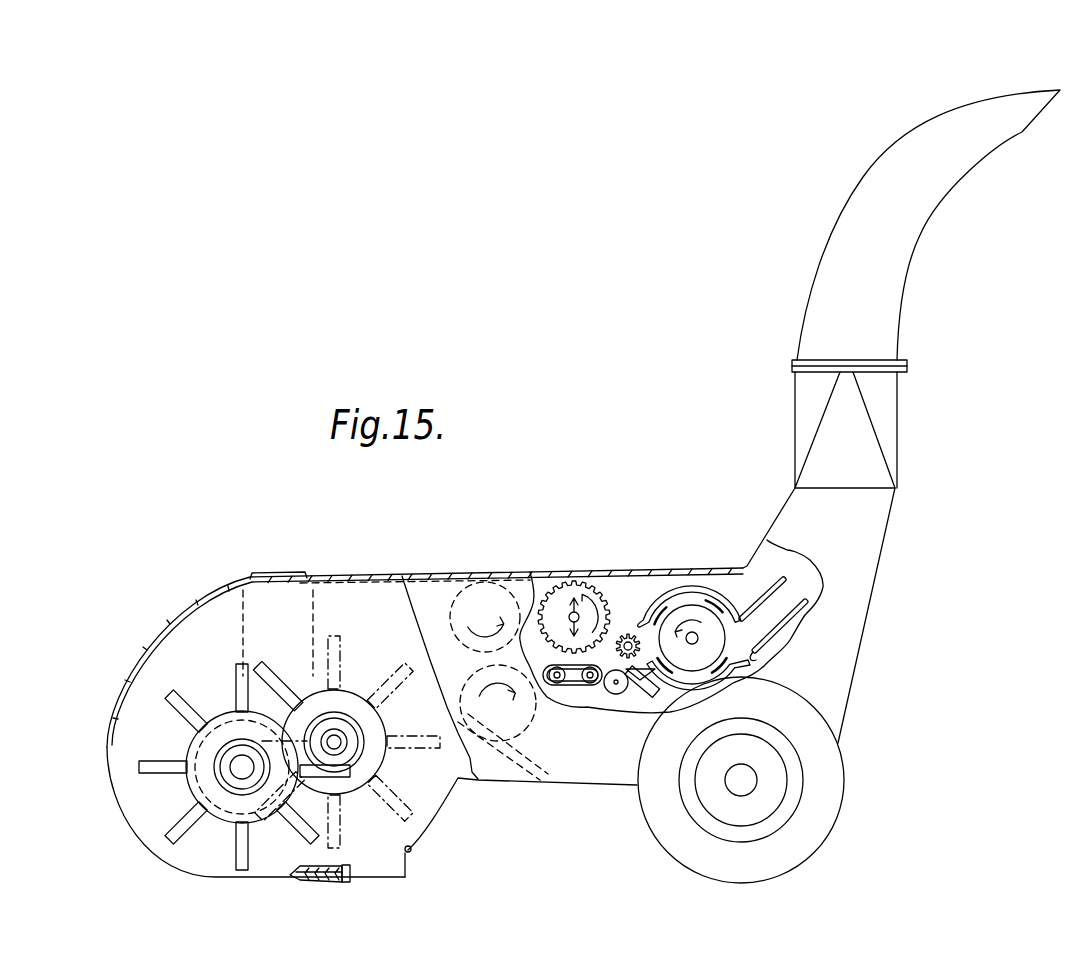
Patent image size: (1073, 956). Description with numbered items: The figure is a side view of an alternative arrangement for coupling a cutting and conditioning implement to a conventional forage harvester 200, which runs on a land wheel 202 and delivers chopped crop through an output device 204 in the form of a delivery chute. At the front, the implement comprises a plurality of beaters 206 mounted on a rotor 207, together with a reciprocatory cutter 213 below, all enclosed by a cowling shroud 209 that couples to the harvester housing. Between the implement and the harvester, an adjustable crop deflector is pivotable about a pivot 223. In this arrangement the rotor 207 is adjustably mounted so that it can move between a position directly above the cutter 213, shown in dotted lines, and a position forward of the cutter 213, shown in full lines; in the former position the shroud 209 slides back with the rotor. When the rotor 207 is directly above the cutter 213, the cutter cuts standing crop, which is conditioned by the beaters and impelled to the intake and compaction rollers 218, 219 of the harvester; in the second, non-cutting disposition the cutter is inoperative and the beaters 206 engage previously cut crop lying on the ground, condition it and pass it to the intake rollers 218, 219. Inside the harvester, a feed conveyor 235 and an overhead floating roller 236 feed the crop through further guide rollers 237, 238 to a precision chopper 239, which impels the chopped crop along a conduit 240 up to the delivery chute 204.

The forage harvester 200 is at (899, 567).
The land wheel 202 is at (833, 795).
The output device 204 is at (893, 323).
The beaters 206 is at (234, 724).
The rotor 207 is at (190, 745).
The cowling shroud 209 is at (210, 570).
The reciprocatory cutter 213 is at (352, 868).
The intake and compaction roller 218 is at (527, 550).
The intake and compaction roller 219 is at (532, 718).
The pivot 223 is at (307, 737).
The feed conveyor 235 is at (580, 687).
The overhead floating roller 236 is at (597, 548).
The guide roller 237 is at (630, 690).
The guide roller 238 is at (622, 635).
The precision chopper 239 is at (693, 612).
The conduit 240 is at (803, 620).